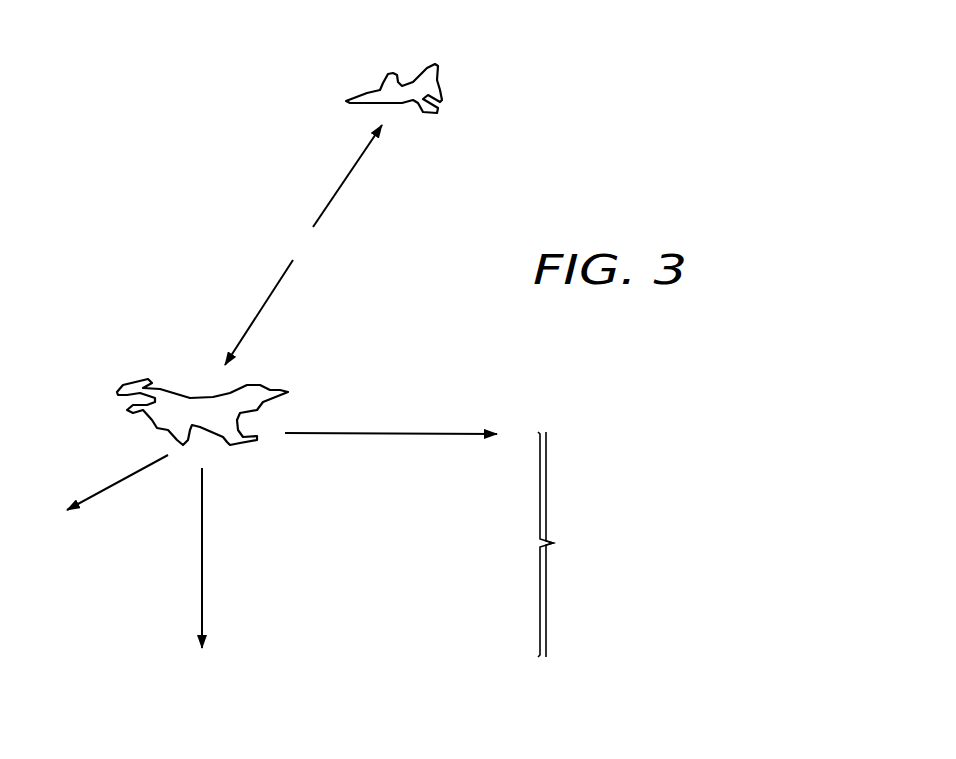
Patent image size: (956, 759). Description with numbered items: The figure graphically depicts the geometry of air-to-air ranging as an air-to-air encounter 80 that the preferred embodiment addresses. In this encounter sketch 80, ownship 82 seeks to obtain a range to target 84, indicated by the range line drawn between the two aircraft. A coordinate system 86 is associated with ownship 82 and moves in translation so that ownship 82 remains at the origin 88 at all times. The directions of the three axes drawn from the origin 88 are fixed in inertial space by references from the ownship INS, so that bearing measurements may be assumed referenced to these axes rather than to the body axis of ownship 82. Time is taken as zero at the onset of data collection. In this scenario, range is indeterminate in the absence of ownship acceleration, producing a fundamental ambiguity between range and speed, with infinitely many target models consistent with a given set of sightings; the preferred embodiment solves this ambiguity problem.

The air-to-air encounter 80 is at (160, 92).
The ownship 82 is at (293, 362).
The target 84 is at (455, 90).
The coordinate system 86 is at (570, 463).
The origin 88 is at (180, 477).